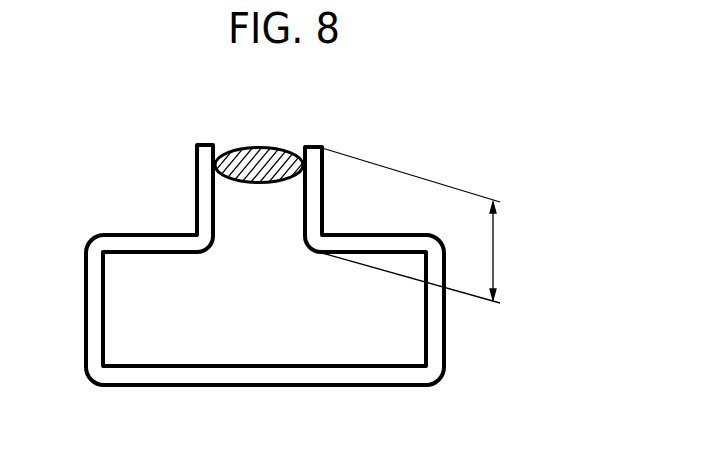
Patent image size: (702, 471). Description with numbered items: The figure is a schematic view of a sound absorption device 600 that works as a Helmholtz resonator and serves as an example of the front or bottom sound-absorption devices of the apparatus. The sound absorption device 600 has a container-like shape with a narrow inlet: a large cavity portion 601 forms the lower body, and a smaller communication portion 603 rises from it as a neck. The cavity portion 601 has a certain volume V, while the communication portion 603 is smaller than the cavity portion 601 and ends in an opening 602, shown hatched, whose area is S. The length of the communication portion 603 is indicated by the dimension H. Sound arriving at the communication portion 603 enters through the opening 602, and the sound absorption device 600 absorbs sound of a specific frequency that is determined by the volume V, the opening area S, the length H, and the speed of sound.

The sound absorption device 600 is at (283, 256).
The cavity portion 601 is at (302, 352).
The opening 602 is at (264, 150).
The communication portion 603 is at (238, 217).
The area of the opening S is at (247, 158).
The volume of the cavity portion V is at (121, 309).
The length of the communication portion H is at (421, 225).